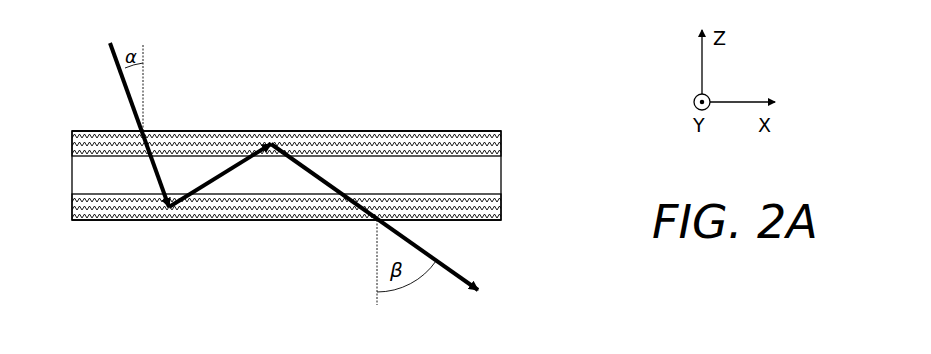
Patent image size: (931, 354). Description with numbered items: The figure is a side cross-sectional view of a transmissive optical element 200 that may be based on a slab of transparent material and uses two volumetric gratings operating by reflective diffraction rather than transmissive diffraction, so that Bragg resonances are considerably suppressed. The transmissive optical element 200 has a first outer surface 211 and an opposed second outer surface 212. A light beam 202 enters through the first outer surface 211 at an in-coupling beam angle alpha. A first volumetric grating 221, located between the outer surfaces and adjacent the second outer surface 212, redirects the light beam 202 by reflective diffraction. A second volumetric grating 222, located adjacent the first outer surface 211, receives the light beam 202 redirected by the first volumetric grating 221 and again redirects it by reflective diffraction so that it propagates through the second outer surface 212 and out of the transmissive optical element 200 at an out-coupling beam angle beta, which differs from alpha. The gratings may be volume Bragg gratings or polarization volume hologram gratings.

The transmissive optical element 200 is at (483, 178).
The light beam 202 is at (125, 90).
The first outer surface 211 is at (388, 130).
The second outer surface 212 is at (103, 221).
The first volumetric grating 221 is at (233, 221).
The second volumetric grating 222 is at (466, 130).